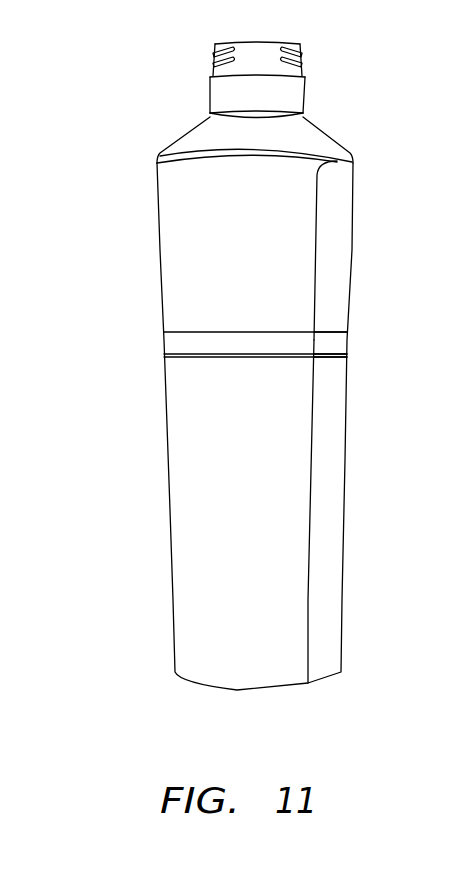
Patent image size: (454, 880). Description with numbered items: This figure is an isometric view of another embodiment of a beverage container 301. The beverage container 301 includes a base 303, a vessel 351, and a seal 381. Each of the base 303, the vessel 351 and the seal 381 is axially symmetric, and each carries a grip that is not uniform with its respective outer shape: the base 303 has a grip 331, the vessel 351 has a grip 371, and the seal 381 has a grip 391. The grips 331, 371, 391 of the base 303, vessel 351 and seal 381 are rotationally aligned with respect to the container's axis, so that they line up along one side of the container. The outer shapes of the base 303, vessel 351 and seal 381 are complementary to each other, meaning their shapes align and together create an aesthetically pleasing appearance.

The beverage container 301 is at (117, 43).
The base 303 is at (180, 515).
The vessel 351 is at (168, 220).
The grip 371 is at (337, 209).
The grip 331 is at (335, 467).
The seal 381 is at (177, 346).
The grip 391 is at (337, 342).